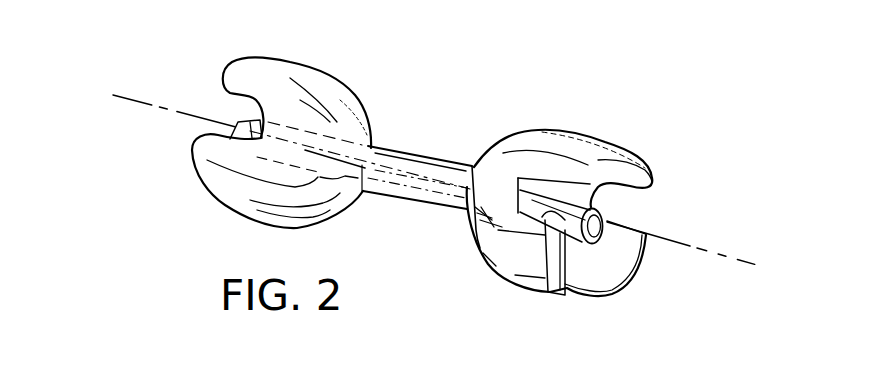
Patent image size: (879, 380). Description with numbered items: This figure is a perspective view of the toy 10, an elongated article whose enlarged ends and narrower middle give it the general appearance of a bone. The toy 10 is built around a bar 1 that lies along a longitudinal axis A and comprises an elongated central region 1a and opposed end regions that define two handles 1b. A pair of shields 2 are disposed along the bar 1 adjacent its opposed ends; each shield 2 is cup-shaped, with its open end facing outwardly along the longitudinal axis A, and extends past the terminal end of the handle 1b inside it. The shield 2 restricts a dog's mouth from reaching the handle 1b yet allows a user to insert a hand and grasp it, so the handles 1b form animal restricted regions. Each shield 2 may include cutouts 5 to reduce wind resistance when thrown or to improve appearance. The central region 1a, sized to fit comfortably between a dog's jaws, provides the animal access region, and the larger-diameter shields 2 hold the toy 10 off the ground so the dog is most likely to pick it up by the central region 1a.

The bar 1 is at (417, 186).
The central region 1a is at (467, 158).
The handle 1b is at (596, 226).
The shield 2 is at (318, 84).
The cutout 5 is at (253, 97).
The toy 10 is at (392, 85).
The longitudinal axis A is at (132, 97).